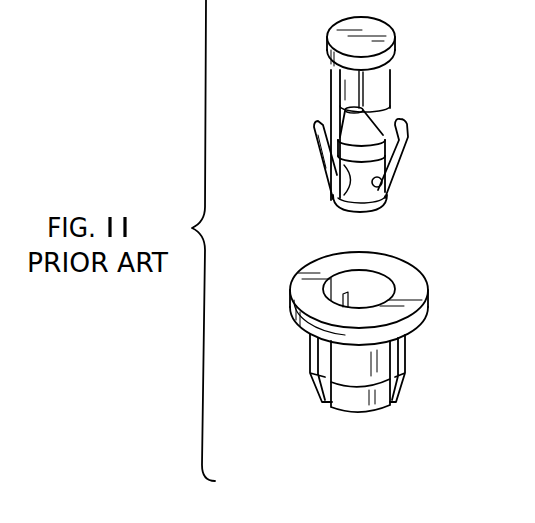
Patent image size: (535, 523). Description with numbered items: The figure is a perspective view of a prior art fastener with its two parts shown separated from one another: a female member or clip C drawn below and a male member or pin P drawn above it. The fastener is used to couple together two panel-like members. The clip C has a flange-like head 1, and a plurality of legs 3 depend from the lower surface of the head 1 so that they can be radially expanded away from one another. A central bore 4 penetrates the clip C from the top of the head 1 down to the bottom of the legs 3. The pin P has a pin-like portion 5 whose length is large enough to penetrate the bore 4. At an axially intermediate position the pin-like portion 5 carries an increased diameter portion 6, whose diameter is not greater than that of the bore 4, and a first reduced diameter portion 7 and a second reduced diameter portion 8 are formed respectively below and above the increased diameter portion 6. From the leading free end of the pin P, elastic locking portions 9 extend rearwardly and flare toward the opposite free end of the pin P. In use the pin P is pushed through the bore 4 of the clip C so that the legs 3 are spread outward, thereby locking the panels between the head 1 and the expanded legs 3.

The pin P is at (316, 44).
The clip C is at (275, 292).
The flange-like head 1 is at (429, 310).
The legs 3 is at (310, 357).
The central bore 4 is at (373, 284).
The pin-like portion 5 is at (328, 90).
The increased diameter portion 6 is at (386, 150).
The first reduced diameter portion 7 is at (381, 181).
The second reduced diameter portion 8 is at (368, 110).
The elastic locking portions 9 is at (404, 130).